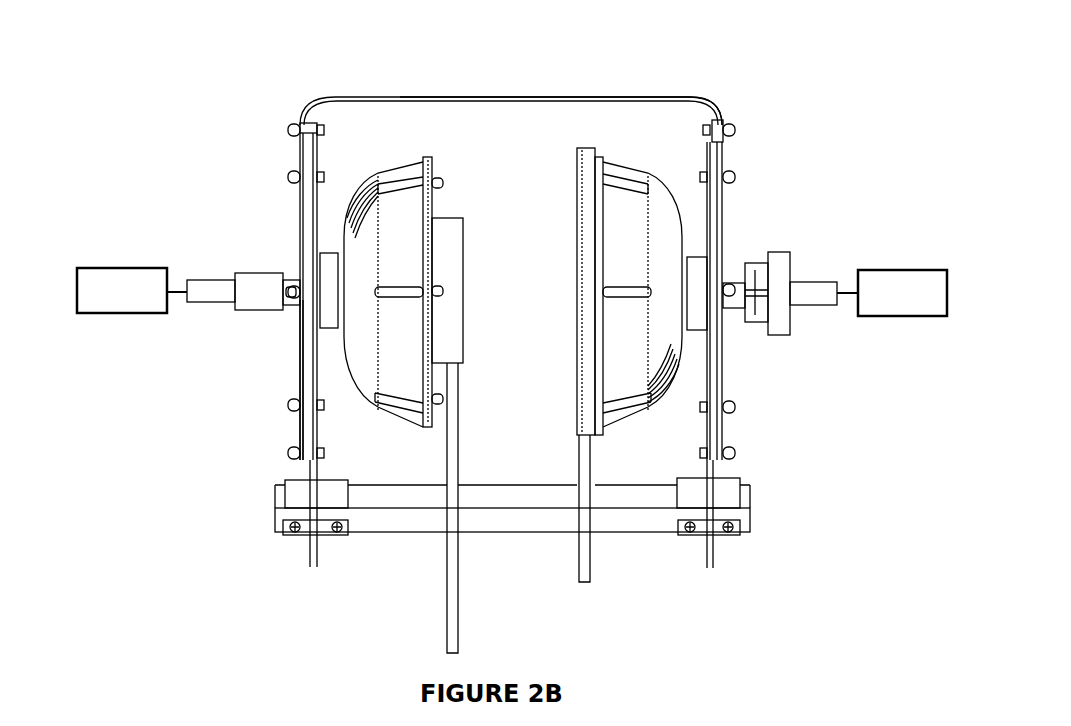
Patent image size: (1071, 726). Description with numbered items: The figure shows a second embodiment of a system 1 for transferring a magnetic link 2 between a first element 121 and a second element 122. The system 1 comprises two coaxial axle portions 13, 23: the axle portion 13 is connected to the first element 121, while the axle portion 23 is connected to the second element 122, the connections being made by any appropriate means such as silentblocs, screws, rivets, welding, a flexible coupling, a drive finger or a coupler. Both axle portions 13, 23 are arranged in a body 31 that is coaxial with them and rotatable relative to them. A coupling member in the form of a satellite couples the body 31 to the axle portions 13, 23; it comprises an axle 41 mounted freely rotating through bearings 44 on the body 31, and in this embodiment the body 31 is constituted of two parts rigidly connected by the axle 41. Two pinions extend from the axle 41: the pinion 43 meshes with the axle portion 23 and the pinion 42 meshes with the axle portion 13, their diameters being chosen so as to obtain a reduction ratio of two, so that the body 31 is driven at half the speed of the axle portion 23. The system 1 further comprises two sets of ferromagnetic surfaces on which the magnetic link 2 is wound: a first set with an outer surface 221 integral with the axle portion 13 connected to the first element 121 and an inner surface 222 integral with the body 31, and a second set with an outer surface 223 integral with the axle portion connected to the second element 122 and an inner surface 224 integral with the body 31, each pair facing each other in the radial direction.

The transfer system 1 is at (185, 121).
The magnetic link 2 is at (668, 97).
The axle portion 13 is at (583, 346).
The axle portion 23 is at (458, 218).
The body 31 is at (300, 365).
The axle 41 is at (392, 525).
The pinion 42 is at (590, 570).
The pinion 43 is at (450, 614).
The bearings 44 is at (288, 528).
The first element 121 is at (892, 293).
The second element 122 is at (132, 290).
The outer surface 221 is at (615, 97).
The inner surface 222 is at (300, 390).
The outer surface 223 is at (643, 97).
The inner surface 224 is at (300, 397).